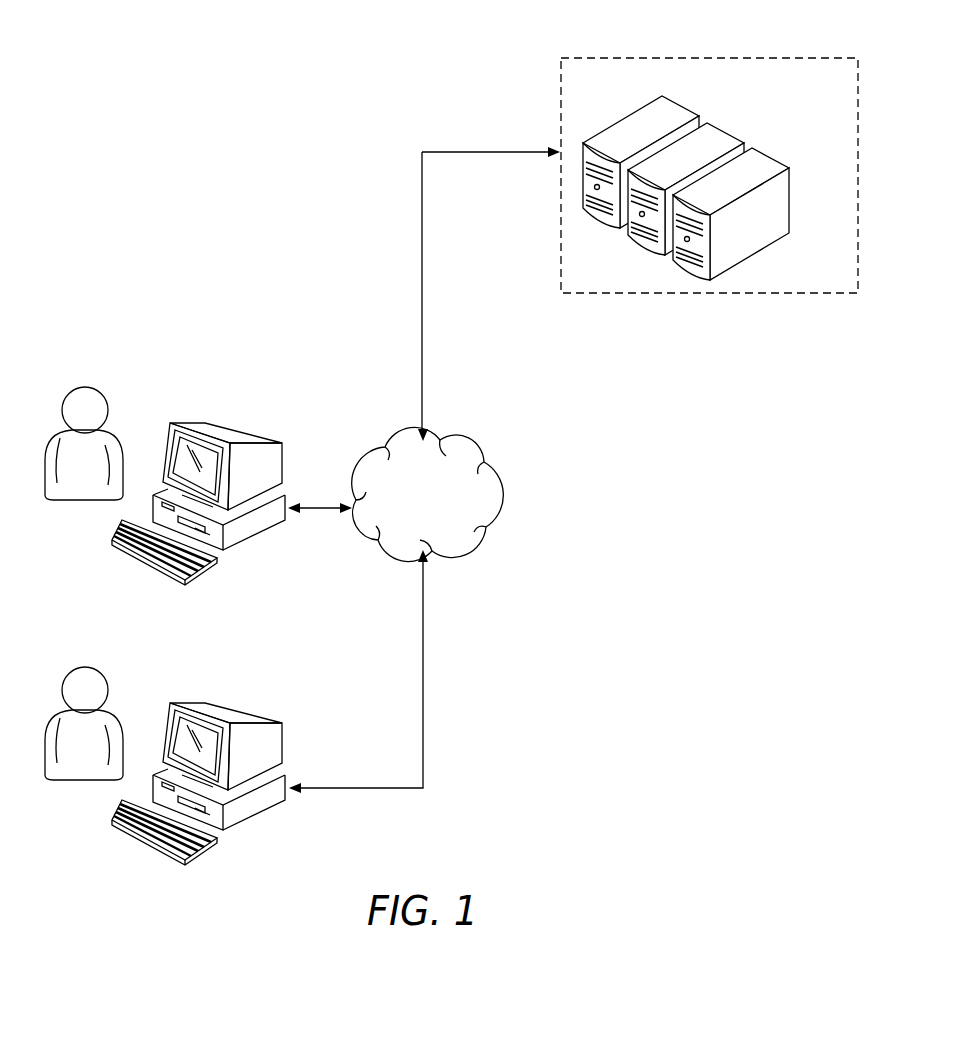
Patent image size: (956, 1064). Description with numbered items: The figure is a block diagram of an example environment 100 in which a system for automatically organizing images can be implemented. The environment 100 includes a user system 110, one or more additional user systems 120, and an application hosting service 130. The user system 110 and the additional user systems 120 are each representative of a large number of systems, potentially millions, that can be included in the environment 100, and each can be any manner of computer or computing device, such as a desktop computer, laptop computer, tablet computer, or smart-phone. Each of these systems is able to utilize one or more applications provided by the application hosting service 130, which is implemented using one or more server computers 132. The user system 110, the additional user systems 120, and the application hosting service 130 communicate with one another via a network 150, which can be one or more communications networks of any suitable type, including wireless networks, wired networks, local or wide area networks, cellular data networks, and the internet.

The environment 100 is at (250, 50).
The user system 110 is at (255, 435).
The additional user system 120 is at (255, 715).
The application hosting service 130 is at (741, 57).
The server computer 132 is at (625, 118).
The network 150 is at (466, 445).